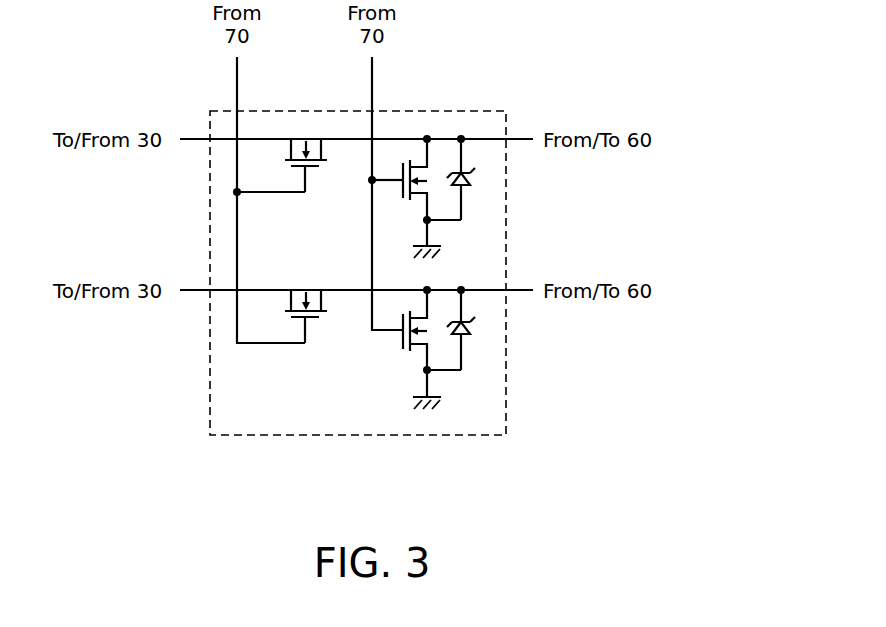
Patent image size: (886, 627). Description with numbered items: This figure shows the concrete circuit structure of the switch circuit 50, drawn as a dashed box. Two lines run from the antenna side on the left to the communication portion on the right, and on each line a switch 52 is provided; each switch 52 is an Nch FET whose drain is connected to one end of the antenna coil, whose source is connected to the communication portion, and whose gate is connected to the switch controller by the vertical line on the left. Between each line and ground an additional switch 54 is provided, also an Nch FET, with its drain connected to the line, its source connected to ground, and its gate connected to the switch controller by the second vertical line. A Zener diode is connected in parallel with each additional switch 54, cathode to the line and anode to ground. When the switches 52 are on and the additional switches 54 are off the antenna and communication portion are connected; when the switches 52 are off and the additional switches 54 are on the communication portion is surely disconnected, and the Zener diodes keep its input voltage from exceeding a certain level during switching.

The switch circuit 50 is at (263, 437).
The switch 52 is at (306, 125).
The additional switch 54 is at (416, 152).